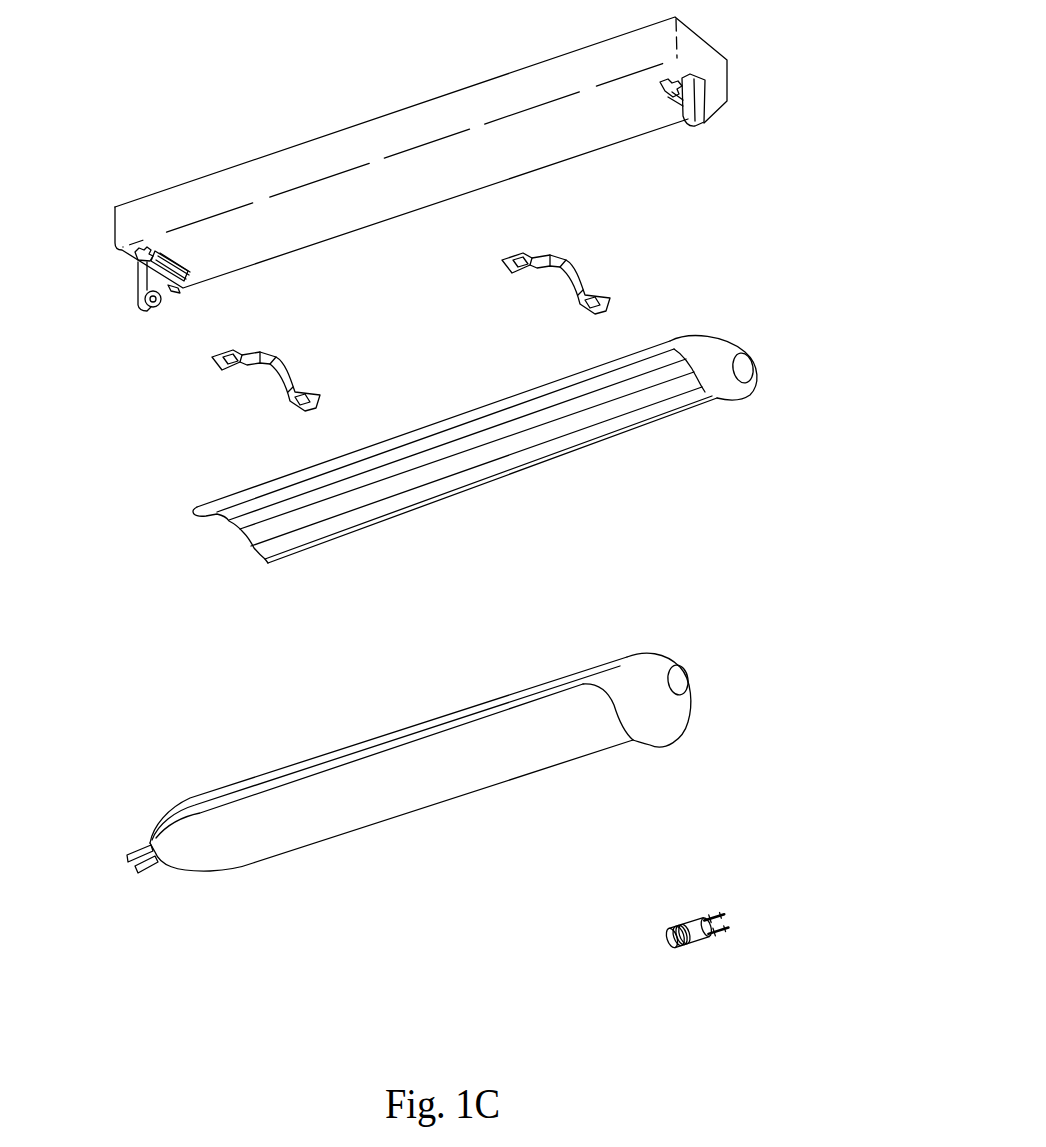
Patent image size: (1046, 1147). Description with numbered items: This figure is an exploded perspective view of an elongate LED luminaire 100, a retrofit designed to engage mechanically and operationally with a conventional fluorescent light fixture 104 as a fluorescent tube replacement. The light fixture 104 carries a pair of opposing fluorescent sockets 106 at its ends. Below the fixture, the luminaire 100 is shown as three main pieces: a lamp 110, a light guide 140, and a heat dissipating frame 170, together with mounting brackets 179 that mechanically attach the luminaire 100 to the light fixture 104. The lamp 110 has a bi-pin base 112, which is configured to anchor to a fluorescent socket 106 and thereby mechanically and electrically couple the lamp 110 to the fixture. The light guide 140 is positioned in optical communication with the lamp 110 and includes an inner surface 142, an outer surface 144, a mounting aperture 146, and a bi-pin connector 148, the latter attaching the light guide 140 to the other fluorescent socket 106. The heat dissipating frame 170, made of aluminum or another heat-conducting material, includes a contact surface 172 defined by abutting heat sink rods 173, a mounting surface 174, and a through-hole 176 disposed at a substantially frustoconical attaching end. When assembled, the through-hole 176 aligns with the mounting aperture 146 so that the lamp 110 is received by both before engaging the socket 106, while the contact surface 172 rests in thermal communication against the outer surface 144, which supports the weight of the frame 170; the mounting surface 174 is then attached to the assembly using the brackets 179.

The elongate LED luminaire 100 is at (185, 459).
The light fixture 104 is at (378, 124).
The fluorescent socket 106 is at (704, 122).
The lamp 110 is at (672, 921).
The bi-pin base 112 is at (725, 914).
The light guide 140 is at (270, 863).
The inner surface 142 is at (398, 793).
The outer surface 144 is at (653, 725).
The mounting aperture 146 is at (691, 680).
The bi-pin connector 148 is at (127, 866).
The heat dissipating frame 170 is at (255, 484).
The contact surface 172 is at (626, 409).
The heat sink rods 173 is at (248, 543).
The mounting surface 174 is at (702, 341).
The through-hole 176 is at (752, 363).
The mounting brackets 179 is at (553, 268).